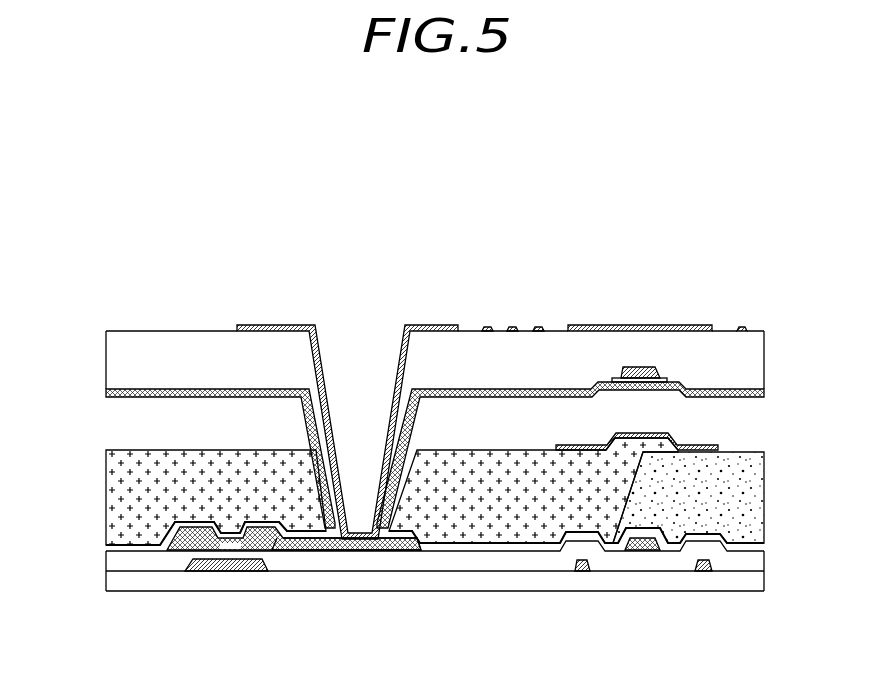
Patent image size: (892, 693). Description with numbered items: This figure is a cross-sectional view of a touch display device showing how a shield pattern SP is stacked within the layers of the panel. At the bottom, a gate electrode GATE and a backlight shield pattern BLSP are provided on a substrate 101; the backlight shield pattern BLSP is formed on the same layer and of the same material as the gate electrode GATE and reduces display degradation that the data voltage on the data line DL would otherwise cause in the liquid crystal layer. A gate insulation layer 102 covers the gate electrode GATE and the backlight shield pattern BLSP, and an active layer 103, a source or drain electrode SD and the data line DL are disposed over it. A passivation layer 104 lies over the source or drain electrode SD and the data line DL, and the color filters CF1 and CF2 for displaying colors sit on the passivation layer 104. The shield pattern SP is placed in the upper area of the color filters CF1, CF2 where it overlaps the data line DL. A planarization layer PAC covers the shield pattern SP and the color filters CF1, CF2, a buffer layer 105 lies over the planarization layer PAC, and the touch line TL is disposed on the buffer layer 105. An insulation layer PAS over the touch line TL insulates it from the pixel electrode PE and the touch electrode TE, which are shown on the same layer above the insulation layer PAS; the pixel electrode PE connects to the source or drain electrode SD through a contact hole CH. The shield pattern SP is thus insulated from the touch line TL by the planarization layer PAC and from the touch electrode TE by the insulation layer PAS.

The substrate 101 is at (110, 583).
The gate insulation layer 102 is at (110, 557).
The active layer 103 is at (297, 550).
The passivation layer 104 is at (110, 544).
The buffer layer 105 is at (110, 393).
The gate electrode GATE is at (207, 571).
The source or drain electrode SD is at (340, 550).
The backlight shield pattern BLSP is at (580, 571).
The data line DL is at (647, 550).
The first color filter CF1 is at (110, 512).
The second color filter CF2 is at (764, 508).
The shield pattern SP is at (718, 448).
The planarization layer PAC is at (110, 432).
The insulation layer PAS is at (110, 361).
The pixel electrode PE is at (427, 325).
The contact hole CH is at (362, 326).
The touch line TL is at (636, 366).
The touch electrode TE is at (670, 325).